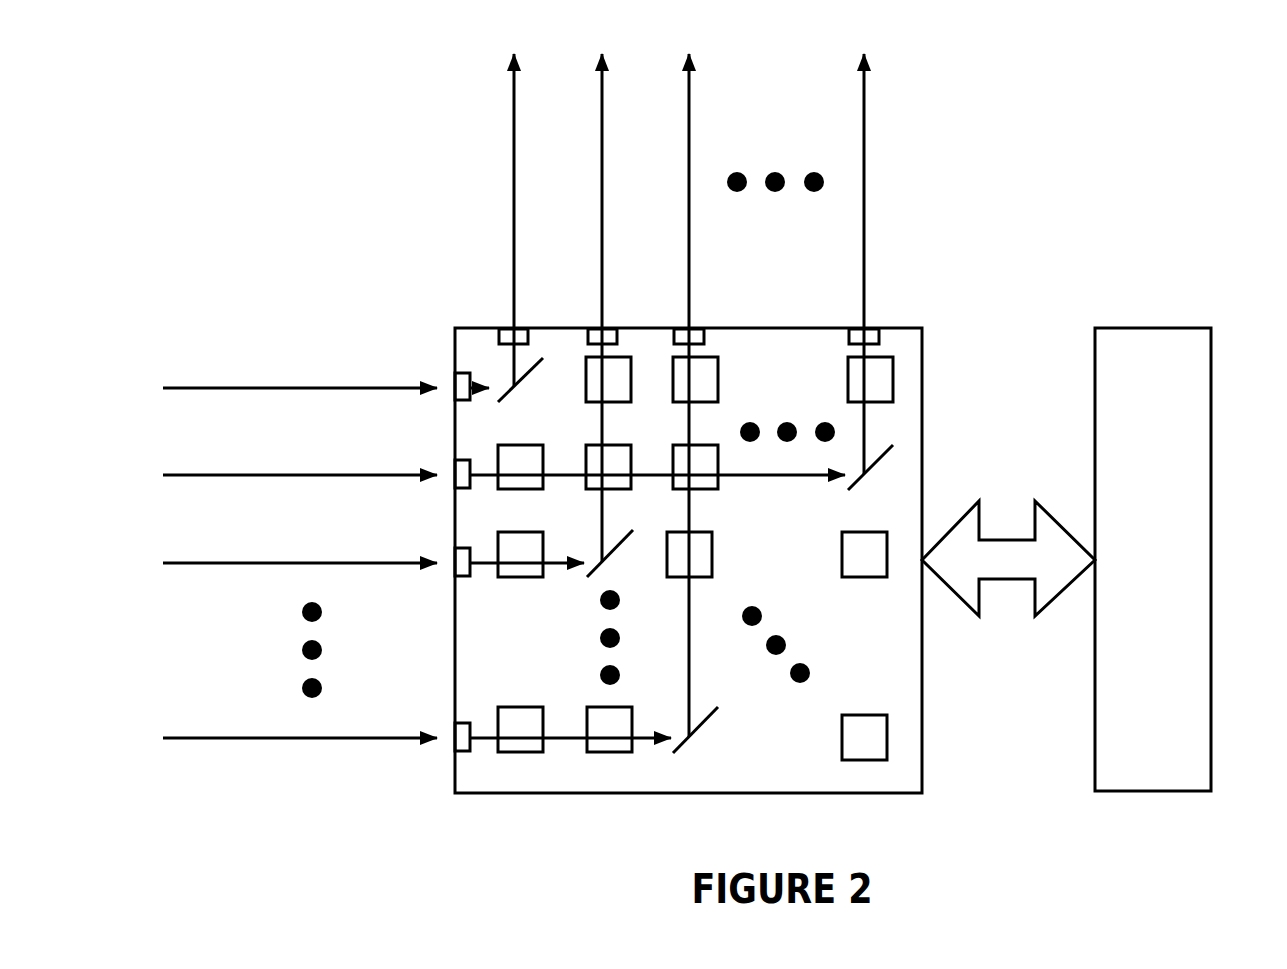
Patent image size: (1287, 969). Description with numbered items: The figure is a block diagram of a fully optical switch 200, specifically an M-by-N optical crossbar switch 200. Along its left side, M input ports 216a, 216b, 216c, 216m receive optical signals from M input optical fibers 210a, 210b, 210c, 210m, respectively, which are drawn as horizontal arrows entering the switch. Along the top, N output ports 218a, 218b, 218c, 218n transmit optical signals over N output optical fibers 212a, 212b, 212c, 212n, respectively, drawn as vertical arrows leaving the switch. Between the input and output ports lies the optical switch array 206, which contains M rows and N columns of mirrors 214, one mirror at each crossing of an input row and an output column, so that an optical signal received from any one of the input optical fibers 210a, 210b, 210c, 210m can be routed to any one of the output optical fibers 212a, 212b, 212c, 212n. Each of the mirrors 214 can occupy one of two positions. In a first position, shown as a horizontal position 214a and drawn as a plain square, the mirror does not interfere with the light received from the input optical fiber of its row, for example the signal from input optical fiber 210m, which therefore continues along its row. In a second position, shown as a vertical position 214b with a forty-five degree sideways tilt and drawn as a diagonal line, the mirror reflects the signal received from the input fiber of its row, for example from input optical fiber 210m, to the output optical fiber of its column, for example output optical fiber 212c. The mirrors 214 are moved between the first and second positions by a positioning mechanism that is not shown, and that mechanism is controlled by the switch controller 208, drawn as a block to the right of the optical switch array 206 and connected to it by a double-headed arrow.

The fully optical switch 200 is at (1030, 178).
The optical switch array 206 is at (922, 357).
The switch controller 208 is at (1152, 328).
The input optical fiber 210a is at (194, 388).
The input optical fiber 210b is at (194, 475).
The input optical fiber 210c is at (194, 563).
The input optical fiber 210m is at (194, 738).
The output optical fiber 212a is at (512, 96).
The output optical fiber 212b is at (600, 96).
The output optical fiber 212c is at (687, 96).
The output optical fiber 212n is at (862, 96).
The mirrors 214 is at (518, 600).
The horizontal position 214a is at (600, 697).
The vertical position 214b is at (712, 742).
The input port 216a is at (453, 394).
The input port 216b is at (453, 482).
The input port 216c is at (453, 570).
The input port 216m is at (453, 744).
The output port 218a is at (520, 328).
The output port 218b is at (608, 328).
The output port 218c is at (698, 328).
The output port 218n is at (872, 328).